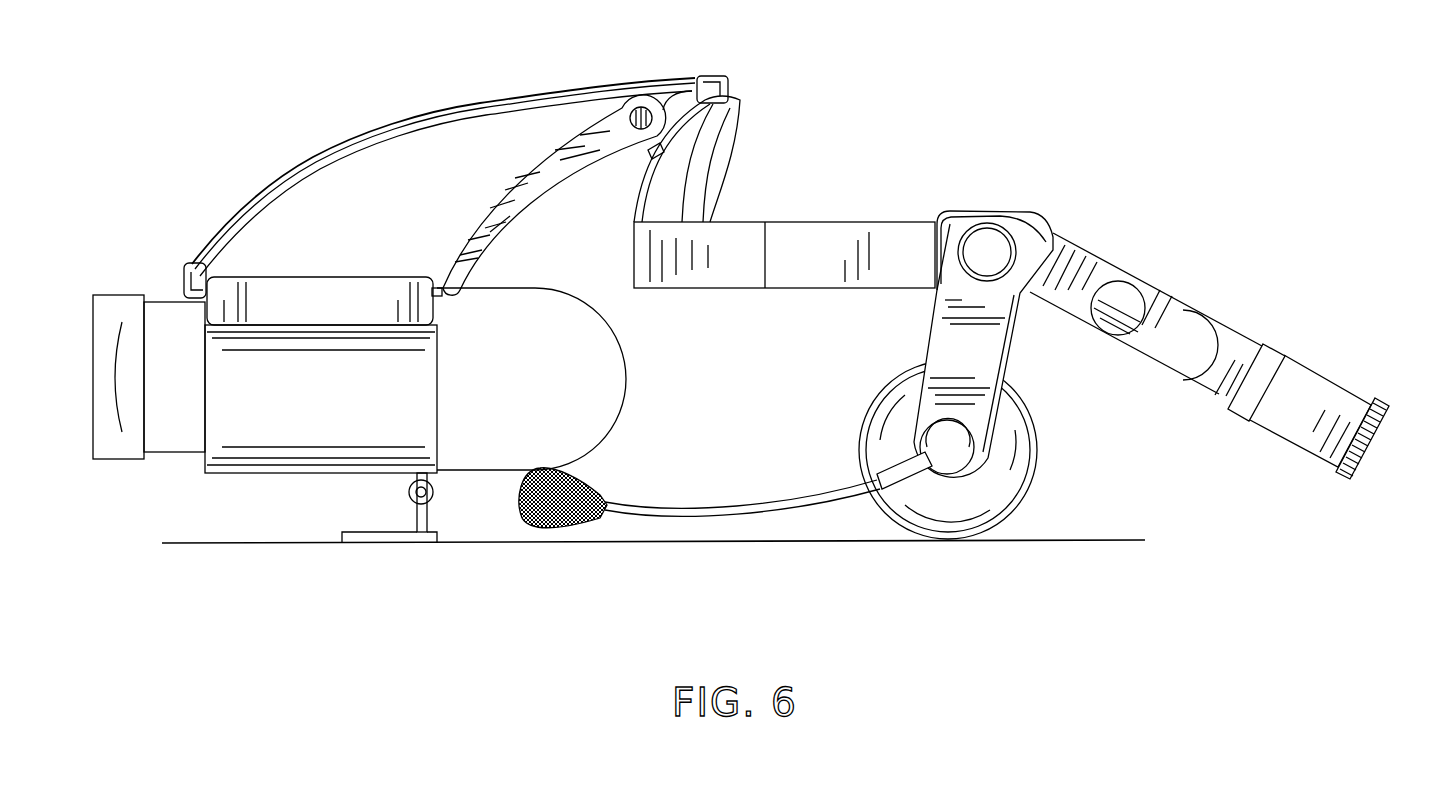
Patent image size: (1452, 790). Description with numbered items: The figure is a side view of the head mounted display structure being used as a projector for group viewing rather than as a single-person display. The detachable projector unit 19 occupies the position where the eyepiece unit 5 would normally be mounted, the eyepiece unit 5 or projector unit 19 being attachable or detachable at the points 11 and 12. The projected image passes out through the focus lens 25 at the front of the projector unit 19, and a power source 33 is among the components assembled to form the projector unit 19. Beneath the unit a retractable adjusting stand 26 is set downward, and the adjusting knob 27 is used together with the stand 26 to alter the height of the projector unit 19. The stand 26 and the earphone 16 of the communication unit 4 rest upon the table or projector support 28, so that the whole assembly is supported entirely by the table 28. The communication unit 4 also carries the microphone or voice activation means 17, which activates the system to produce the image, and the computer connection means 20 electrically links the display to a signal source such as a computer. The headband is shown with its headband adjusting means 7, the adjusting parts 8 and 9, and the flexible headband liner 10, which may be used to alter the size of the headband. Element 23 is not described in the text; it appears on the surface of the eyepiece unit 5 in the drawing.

The communication unit 4 is at (1003, 365).
The eyepiece unit 5 is at (558, 144).
The headband adjusting means 7 is at (1390, 406).
The headband adjusting part 8 is at (1318, 378).
The headband adjusting part 9 is at (818, 221).
The flexible headband liner 10 is at (717, 158).
The detachment point 11 is at (666, 96).
The detachment point 12 is at (438, 288).
The earphone 16 is at (1018, 470).
The microphone or voice activation means 17 is at (572, 532).
The projector unit 19 is at (345, 233).
The computer connection means 20 is at (448, 112).
The strut surface 23 is at (508, 223).
The focus lens 25 is at (110, 461).
The retractable adjusting stand 26 is at (428, 532).
The adjusting knob 27 is at (433, 494).
The table or projector support 28 is at (473, 543).
The power source 33 is at (790, 397).